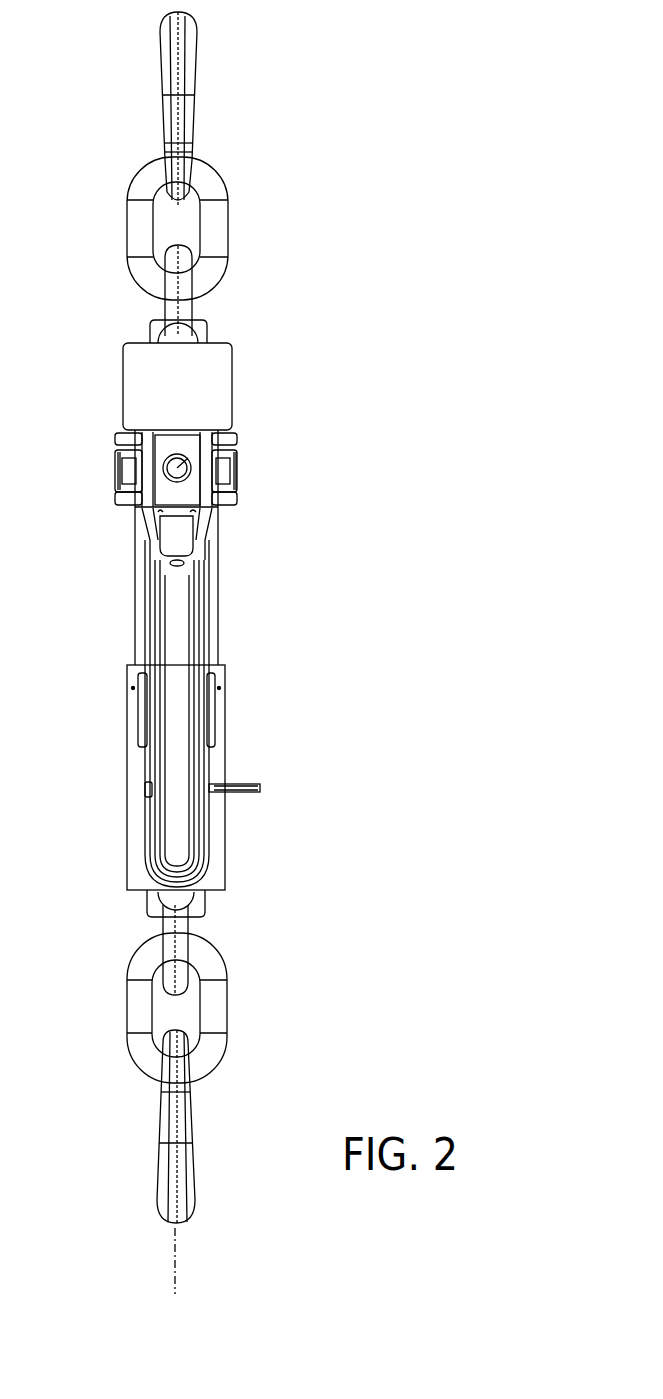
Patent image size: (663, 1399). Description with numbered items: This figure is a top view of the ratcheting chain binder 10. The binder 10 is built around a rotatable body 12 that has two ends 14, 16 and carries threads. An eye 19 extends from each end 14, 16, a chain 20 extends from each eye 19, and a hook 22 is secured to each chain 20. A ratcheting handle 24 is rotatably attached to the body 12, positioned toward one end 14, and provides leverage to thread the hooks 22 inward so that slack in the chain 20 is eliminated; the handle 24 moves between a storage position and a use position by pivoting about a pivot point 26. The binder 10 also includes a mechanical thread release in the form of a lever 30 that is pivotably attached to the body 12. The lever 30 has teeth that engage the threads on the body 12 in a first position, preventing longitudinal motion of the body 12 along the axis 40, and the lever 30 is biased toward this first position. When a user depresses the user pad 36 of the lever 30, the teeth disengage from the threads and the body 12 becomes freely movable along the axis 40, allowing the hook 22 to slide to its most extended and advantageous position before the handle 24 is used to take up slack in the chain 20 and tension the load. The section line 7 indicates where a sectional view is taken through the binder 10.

The ratcheting chain binder 10 is at (503, 132).
The rotatable body 12 is at (218, 630).
The end 14 is at (218, 515).
The end 16 is at (218, 868).
The eye 19 is at (163, 305).
The chain 20 is at (220, 223).
The hook 22 is at (190, 107).
The ratcheting handle 24 is at (175, 752).
The pivot point 26 is at (188, 458).
The lever 30 is at (205, 738).
The user pad 36 is at (210, 703).
The axis 40 is at (176, 1242).
The section line 7 is at (175, 1290).